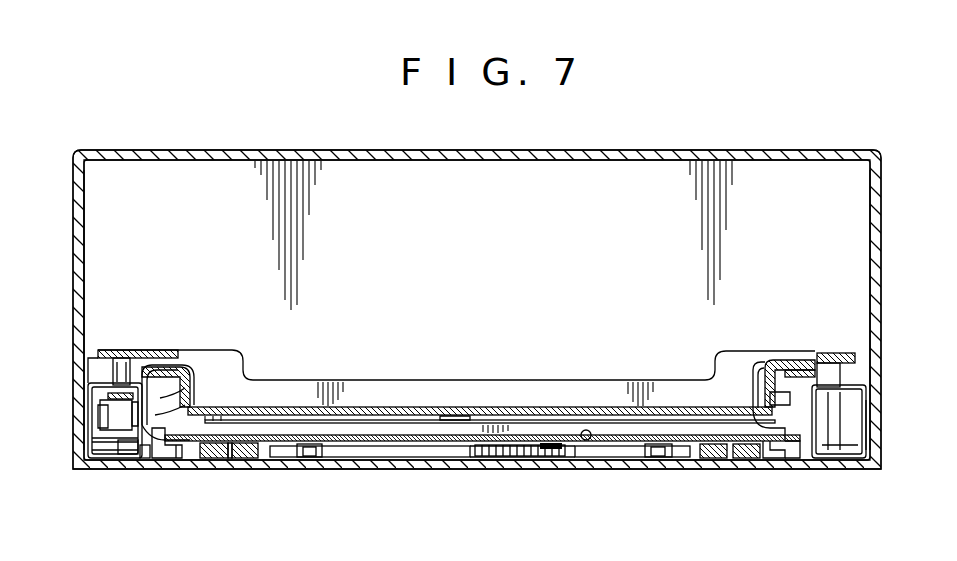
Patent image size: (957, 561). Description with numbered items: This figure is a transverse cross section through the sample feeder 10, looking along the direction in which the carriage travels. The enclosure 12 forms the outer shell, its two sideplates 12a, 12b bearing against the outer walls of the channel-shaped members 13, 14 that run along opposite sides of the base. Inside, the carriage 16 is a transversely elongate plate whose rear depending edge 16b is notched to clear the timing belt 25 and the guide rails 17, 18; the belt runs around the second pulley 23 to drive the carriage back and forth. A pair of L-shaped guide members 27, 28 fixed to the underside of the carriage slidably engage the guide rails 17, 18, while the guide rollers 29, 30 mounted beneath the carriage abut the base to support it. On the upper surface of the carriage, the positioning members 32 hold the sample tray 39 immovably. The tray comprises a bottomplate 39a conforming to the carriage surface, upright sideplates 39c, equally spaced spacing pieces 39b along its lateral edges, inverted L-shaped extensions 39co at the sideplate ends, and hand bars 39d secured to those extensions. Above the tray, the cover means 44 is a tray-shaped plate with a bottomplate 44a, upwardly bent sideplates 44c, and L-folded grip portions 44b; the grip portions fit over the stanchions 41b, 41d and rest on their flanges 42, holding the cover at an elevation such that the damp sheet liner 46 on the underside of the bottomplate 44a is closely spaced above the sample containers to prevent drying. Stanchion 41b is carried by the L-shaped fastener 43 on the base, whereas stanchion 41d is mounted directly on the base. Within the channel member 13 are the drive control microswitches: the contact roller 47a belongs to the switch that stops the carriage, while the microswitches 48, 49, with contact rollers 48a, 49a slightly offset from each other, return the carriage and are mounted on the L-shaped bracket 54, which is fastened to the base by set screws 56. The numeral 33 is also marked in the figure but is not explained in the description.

The sample feeder 10 is at (641, 141).
The enclosure 12 is at (464, 151).
The sideplate 12a is at (79, 270).
The sideplate 12b is at (882, 297).
The channel-shaped member 13 is at (99, 380).
The channel-shaped member 14 is at (866, 392).
The carriage 16 is at (397, 458).
The rear depending edge 16b is at (360, 424).
The guide rail 17 is at (250, 445).
The guide rail 18 is at (712, 458).
The second pulley 23 is at (548, 450).
The timing belt 25 is at (500, 457).
The L-shaped guide member 27 is at (231, 458).
The L-shaped guide member 28 is at (745, 458).
The guide roller 29 is at (309, 458).
The guide roller 30 is at (660, 458).
The positioning member 32 is at (166, 446).
The bracket 33 is at (790, 450).
The sample tray 39 is at (293, 433).
The bottomplate 39a is at (586, 441).
The spacing piece 39b is at (216, 444).
The sideplate 39c is at (447, 442).
The extension 39co is at (186, 368).
The hand bar 39d is at (162, 360).
The stanchion 41b is at (84, 358).
The stanchion 41d is at (845, 415).
The flange 42 is at (108, 350).
The L-shaped fastener 43 is at (96, 393).
The cover means 44 is at (474, 366).
The bottomplate 44a is at (405, 410).
The grip portion 44b is at (141, 360).
The sideplate 44c is at (498, 379).
The sheet liner 46 is at (455, 421).
The contact roller 47a is at (126, 454).
The microswitch 48 is at (95, 432).
The contact roller 48a is at (155, 415).
The microswitch 49 is at (96, 412).
The contact roller 49a is at (160, 398).
The L-shaped bracket 54 is at (110, 452).
The set screw 56 is at (145, 458).